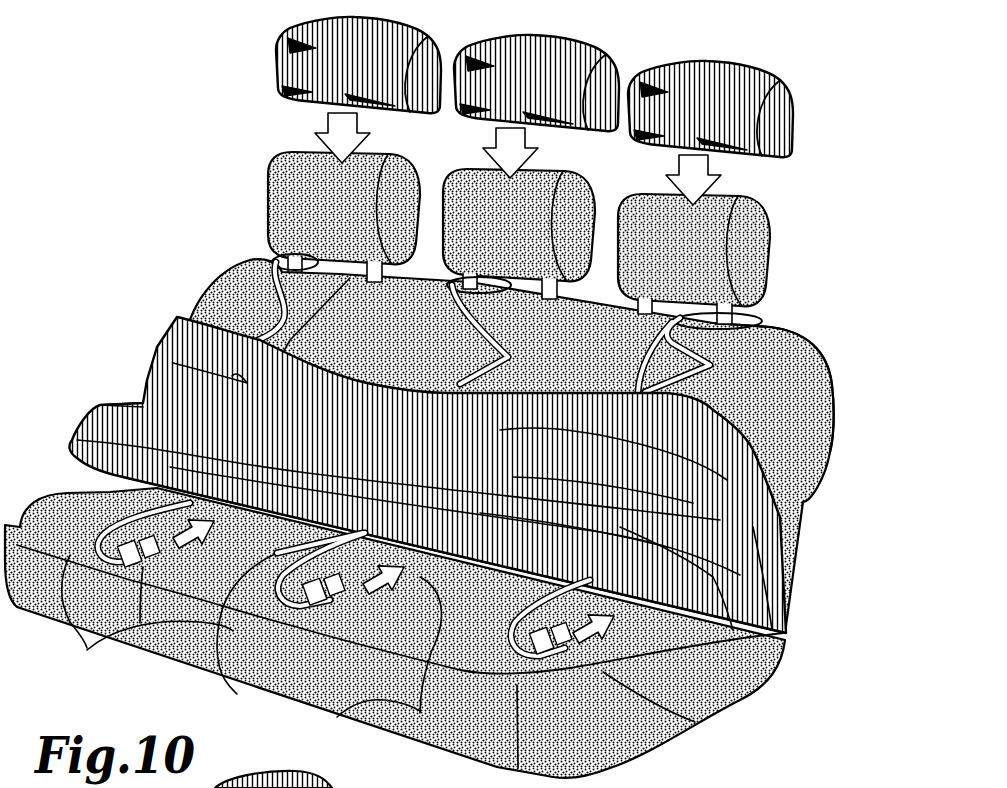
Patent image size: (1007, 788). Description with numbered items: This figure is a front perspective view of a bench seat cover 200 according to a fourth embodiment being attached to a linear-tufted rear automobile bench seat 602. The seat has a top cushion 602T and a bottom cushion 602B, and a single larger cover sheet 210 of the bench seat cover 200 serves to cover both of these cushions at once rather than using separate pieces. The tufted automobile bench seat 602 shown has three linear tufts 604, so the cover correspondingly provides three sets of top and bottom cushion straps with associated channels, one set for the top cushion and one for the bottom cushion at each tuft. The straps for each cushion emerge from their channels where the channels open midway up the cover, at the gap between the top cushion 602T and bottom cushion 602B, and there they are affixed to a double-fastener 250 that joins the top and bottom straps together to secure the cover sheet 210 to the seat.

The bench seat cover 200 is at (166, 341).
The cover sheet 210 is at (755, 550).
The double-fastener 250 is at (110, 632).
The tufted automobile bench seat 602 is at (773, 328).
The top cushion 602T is at (797, 340).
The bottom cushion 602B is at (663, 745).
The linear tufts 604 is at (250, 262).